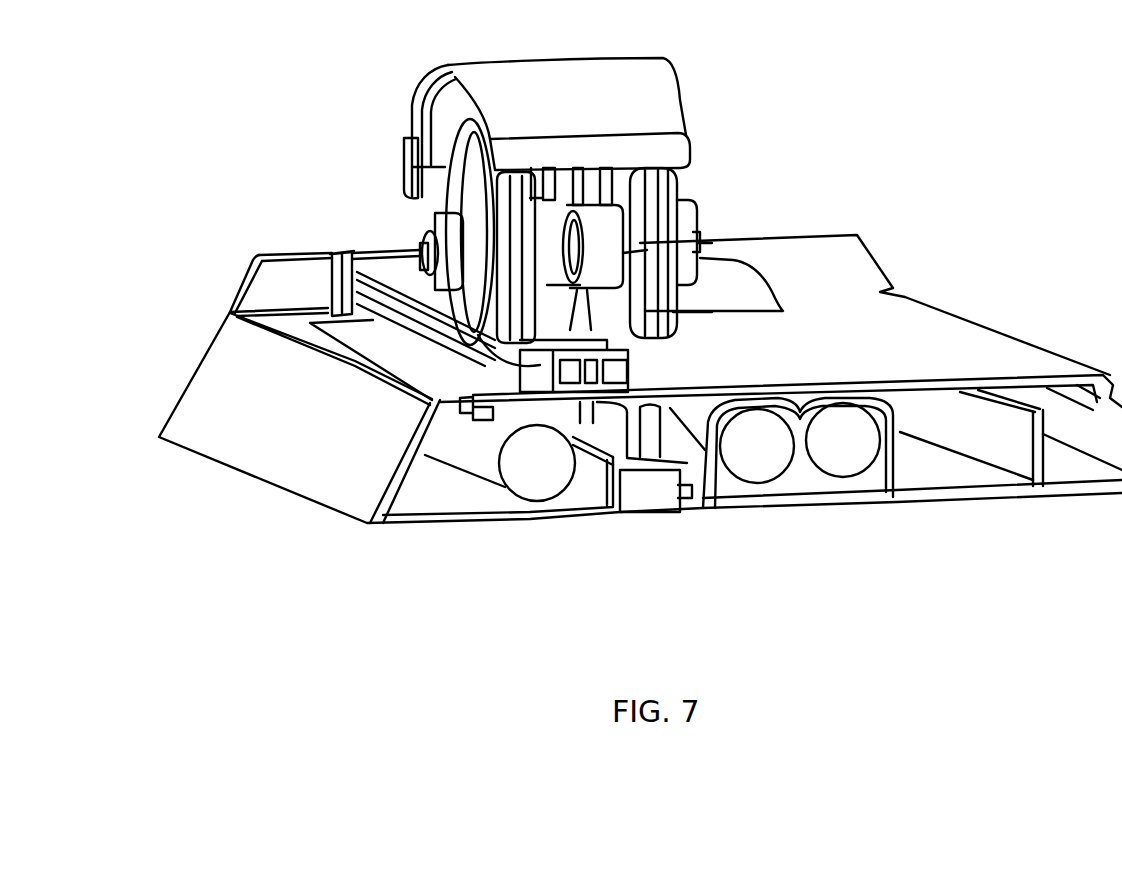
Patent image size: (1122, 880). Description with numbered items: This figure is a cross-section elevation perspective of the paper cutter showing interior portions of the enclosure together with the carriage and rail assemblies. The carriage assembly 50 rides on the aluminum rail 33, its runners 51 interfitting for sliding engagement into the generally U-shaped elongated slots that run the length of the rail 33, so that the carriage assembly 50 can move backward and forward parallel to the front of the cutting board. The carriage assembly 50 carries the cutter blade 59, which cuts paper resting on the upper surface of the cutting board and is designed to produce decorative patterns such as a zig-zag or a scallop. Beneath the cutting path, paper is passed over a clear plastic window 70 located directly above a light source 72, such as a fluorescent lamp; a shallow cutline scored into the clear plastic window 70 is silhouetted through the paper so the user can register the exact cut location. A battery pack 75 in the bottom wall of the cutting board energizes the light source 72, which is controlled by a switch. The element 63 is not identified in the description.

The rail 33 is at (447, 322).
The carriage assembly 50 is at (633, 80).
The runners 51 is at (523, 362).
The cutter blade 59 is at (430, 398).
The front band of cover 63 is at (667, 117).
The clear plastic window 70 is at (540, 397).
The light source 72 is at (527, 480).
The battery pack 75 is at (843, 443).